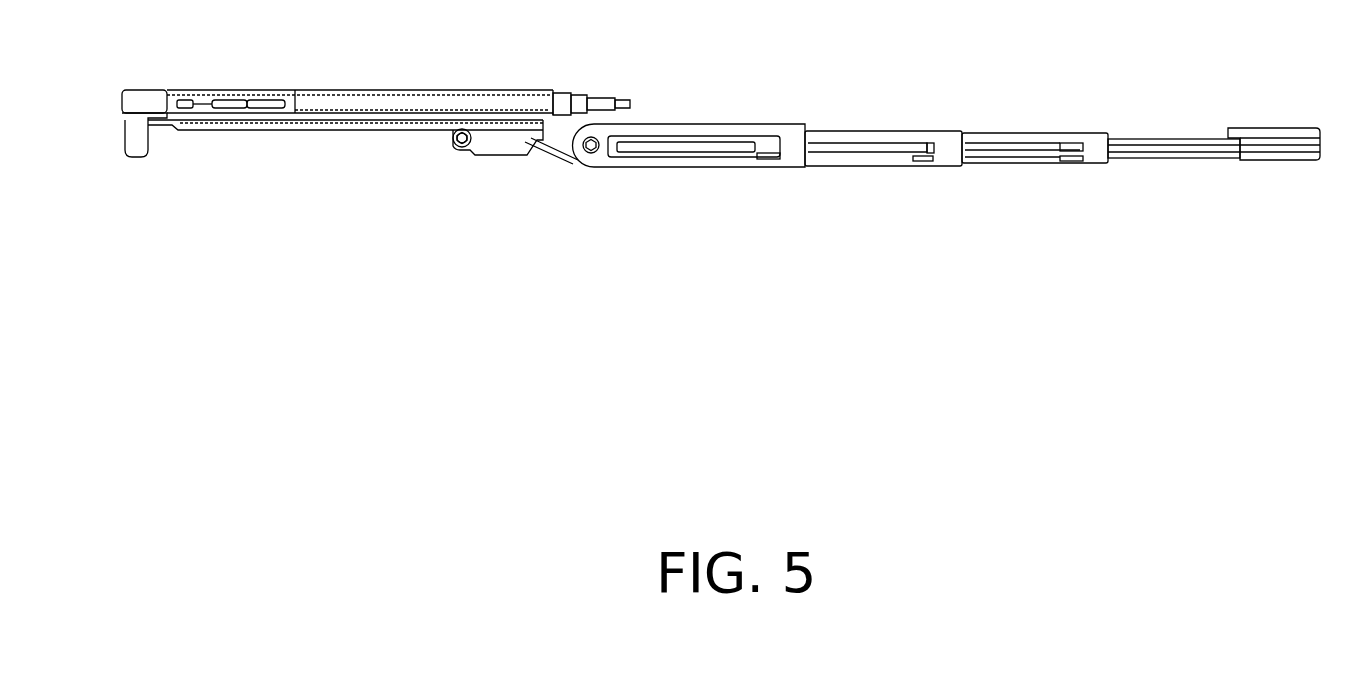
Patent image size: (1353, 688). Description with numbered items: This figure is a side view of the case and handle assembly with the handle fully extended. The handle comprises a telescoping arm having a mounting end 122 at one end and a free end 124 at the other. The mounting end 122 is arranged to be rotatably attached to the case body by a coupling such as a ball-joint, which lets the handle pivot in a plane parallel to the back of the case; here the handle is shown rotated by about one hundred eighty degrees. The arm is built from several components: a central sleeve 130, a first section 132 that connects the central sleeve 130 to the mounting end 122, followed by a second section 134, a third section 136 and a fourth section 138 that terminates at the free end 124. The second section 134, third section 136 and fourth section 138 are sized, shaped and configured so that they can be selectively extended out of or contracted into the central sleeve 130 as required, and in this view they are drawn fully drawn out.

The mounting end 122 is at (484, 146).
The free end 124 is at (1320, 130).
The central sleeve 130 is at (687, 162).
The first section 132 is at (557, 155).
The second section 134 is at (862, 130).
The third section 136 is at (996, 132).
The fourth section 138 is at (1158, 138).